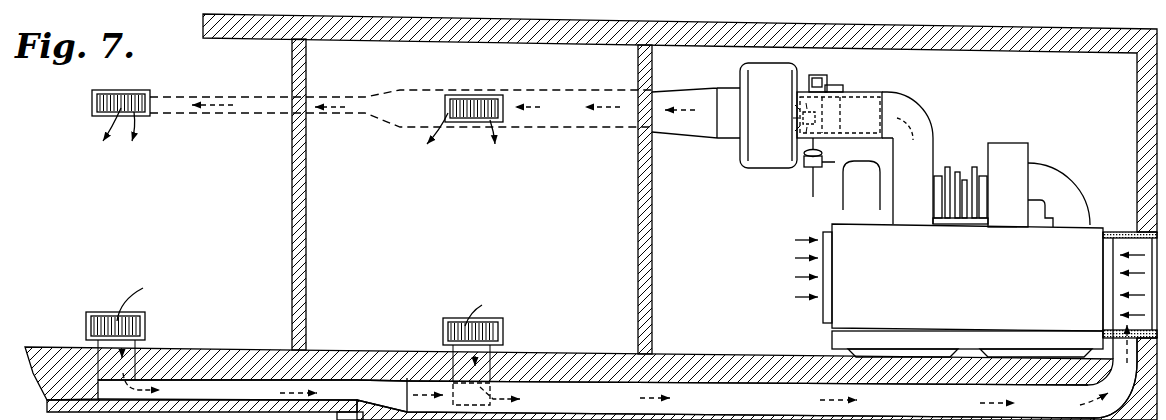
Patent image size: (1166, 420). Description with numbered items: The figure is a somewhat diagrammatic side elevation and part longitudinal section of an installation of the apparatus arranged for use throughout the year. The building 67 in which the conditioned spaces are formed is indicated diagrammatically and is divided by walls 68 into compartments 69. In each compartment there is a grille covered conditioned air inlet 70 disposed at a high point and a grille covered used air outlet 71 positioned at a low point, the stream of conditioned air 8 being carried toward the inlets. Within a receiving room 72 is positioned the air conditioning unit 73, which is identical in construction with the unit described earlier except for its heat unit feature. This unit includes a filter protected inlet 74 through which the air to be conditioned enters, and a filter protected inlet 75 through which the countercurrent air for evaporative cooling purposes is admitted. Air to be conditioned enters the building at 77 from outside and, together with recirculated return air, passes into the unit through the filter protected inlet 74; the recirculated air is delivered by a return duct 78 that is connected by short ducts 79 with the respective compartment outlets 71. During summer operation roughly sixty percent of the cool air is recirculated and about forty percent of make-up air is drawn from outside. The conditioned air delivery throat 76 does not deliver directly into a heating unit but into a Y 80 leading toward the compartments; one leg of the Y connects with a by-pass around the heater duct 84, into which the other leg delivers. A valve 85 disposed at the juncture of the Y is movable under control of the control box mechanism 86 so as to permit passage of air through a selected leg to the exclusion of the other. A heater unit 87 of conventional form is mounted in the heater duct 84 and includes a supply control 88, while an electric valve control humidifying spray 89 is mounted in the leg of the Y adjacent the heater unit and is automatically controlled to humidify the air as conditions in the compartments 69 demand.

The air stream 8 is at (567, 131).
The building 67 is at (569, 46).
The walls 68 is at (306, 325).
The compartments 69 is at (346, 201).
The grille covered conditioned air inlet 70 is at (141, 104).
The grille covered used air outlet 71 is at (146, 322).
The receiving room 72 is at (781, 264).
The air conditioning unit 73 is at (1094, 222).
The filter protected inlet 74 is at (1106, 264).
The filter protected inlet 75 is at (822, 314).
The conditioned air delivery throat 76 is at (913, 150).
The air entry 77 is at (1143, 308).
The return duct 78 is at (318, 382).
The short ducts 79 is at (138, 366).
The Y 80 is at (870, 102).
The heater duct 84 is at (697, 128).
The valve 85 is at (890, 113).
The control box mechanism 86 is at (827, 73).
The heater unit 87 is at (760, 83).
The supply control 88 is at (805, 166).
The electric valve control humidifying spray 89 is at (804, 122).